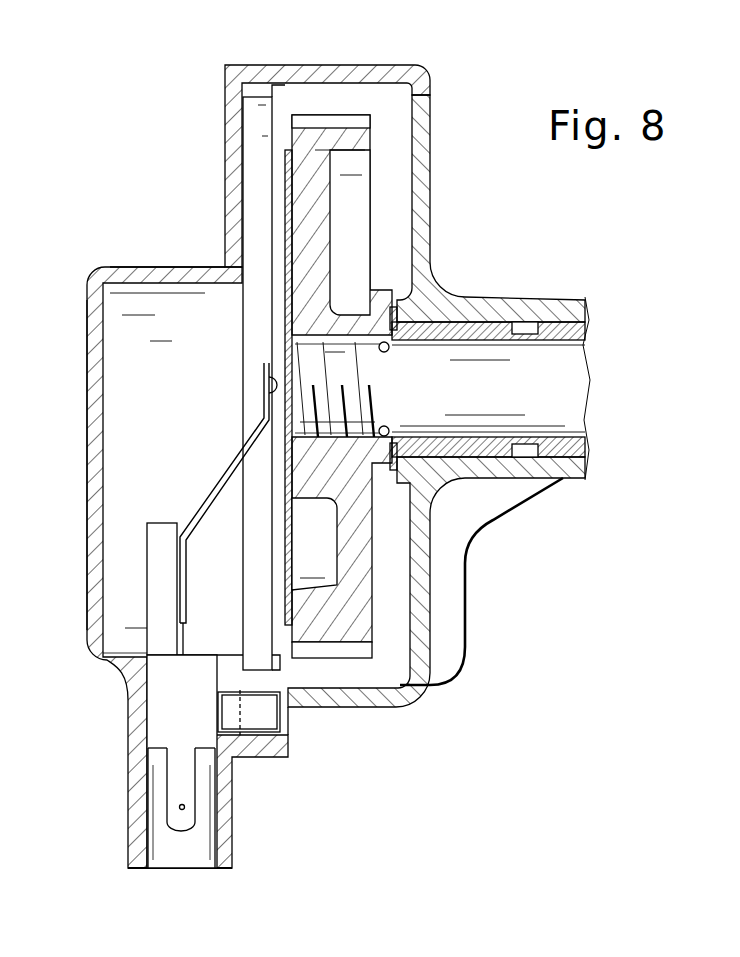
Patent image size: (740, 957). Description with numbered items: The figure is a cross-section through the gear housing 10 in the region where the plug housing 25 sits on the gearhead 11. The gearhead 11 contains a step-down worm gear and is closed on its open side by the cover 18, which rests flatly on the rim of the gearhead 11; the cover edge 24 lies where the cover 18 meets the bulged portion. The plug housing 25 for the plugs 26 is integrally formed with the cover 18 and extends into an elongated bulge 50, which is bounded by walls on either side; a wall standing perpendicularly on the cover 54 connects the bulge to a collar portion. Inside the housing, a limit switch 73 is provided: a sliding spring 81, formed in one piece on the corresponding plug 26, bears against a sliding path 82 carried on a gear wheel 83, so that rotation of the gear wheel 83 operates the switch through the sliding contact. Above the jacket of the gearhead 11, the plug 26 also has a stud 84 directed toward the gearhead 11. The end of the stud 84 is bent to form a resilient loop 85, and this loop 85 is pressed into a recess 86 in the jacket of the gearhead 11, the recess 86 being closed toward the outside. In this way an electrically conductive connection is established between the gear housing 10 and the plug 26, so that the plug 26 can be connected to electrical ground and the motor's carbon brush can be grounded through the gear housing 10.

The gear housing 10 is at (420, 706).
The gearhead 11 is at (370, 698).
The cover 18 is at (232, 130).
The cover edge 24 is at (169, 256).
The plug housing 25 is at (136, 836).
The plug 26 is at (182, 820).
The elongated bulge 50 is at (80, 372).
The cover 54 is at (97, 436).
The limit switch 73 is at (221, 385).
The sliding spring 81 is at (207, 493).
The sliding path 82 is at (286, 150).
The gear wheel 83 is at (312, 140).
The stud 84 is at (228, 717).
The resilient loop 85 is at (267, 712).
The recess 86 is at (262, 728).